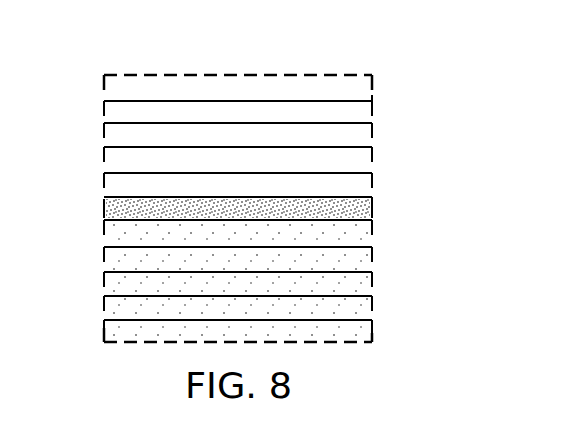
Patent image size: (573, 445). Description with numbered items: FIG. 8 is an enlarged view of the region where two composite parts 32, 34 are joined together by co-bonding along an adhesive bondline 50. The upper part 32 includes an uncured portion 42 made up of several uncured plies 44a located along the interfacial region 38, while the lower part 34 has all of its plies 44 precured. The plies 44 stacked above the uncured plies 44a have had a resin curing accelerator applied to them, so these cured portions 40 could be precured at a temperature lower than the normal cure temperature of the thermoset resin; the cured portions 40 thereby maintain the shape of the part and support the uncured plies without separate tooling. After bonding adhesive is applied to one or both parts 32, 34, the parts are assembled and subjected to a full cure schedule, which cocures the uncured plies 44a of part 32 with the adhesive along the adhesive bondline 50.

The part 32 is at (112, 85).
The part 34 is at (112, 333).
The interfacial region 38 is at (449, 188).
The cured portions 40 is at (363, 308).
The uncured portion 42 is at (366, 108).
The plies 44 is at (285, 112).
The uncured plies 44a is at (195, 137).
The adhesive bondline 50 is at (366, 205).